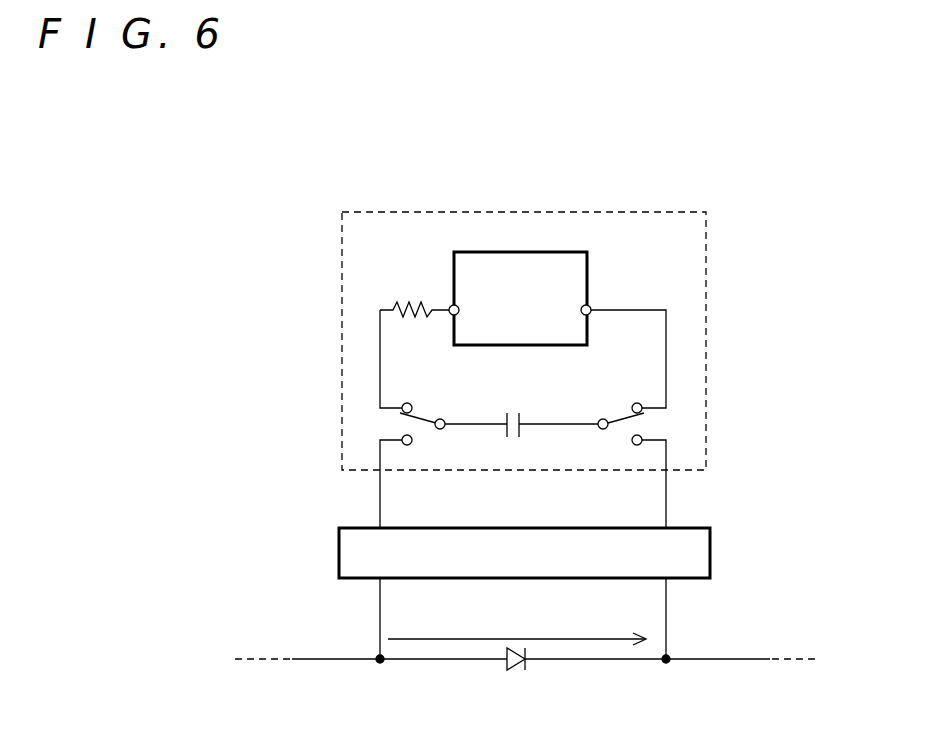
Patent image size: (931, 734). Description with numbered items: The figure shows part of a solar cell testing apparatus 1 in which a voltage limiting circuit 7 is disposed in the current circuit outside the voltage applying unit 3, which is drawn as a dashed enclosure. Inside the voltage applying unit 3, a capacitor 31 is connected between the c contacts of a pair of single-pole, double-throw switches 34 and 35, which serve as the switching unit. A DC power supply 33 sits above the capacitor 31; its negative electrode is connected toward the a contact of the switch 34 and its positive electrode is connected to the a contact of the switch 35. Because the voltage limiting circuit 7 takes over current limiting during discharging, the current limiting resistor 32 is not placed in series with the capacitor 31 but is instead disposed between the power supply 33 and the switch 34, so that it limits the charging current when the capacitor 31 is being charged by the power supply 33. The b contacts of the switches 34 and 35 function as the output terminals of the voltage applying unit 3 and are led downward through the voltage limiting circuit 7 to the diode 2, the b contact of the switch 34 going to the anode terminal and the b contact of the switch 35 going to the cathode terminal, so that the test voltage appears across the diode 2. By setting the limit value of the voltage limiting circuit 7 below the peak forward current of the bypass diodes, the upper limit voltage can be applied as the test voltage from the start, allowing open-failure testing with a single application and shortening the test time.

The solar cell testing apparatus 1 is at (495, 157).
The diode 2 is at (511, 666).
The voltage applying unit 3 is at (683, 212).
The voltage limiting circuit 7 is at (589, 528).
The capacitor 31 is at (511, 412).
The current limiting resistor 32 is at (410, 302).
The power supply 33 is at (552, 252).
The switch 34 is at (420, 415).
The switch 35 is at (624, 416).